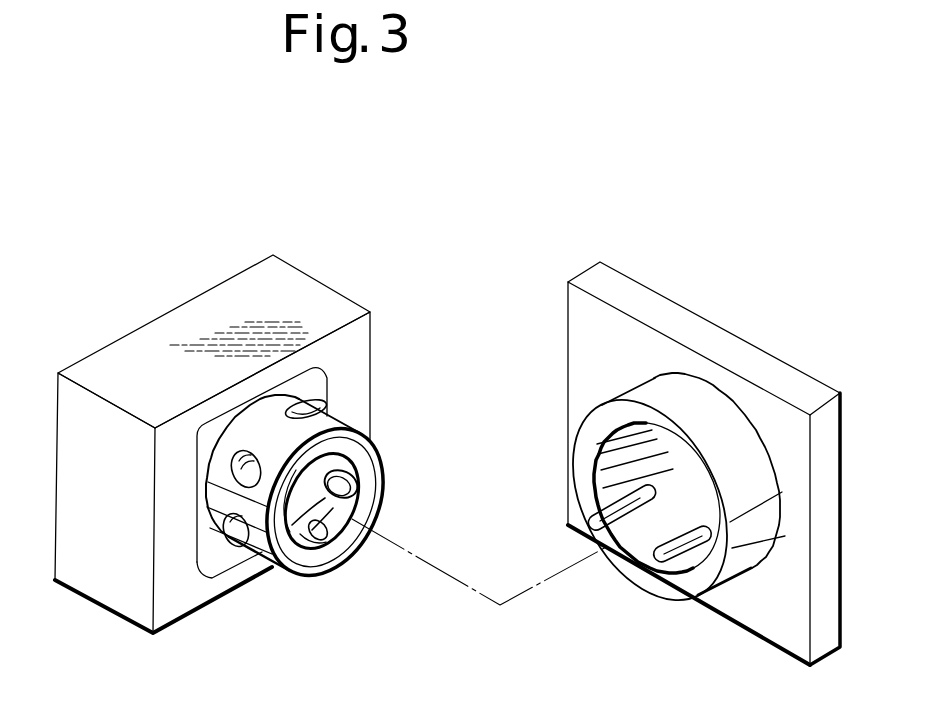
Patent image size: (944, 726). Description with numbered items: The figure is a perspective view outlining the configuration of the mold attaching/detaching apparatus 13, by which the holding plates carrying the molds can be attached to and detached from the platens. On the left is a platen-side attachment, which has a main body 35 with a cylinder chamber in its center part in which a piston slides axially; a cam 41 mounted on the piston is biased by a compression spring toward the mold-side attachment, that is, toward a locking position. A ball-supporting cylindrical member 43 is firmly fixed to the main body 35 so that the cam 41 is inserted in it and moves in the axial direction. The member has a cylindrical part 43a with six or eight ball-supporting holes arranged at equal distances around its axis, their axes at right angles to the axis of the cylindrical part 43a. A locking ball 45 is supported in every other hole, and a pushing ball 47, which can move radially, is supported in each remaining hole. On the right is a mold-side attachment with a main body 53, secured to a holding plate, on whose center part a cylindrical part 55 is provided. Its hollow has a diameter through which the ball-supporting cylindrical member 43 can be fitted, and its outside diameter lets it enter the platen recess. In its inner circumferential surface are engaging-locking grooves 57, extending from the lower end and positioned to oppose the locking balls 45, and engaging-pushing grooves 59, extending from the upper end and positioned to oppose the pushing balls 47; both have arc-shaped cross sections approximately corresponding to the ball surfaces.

The mold attaching/detaching apparatus 13 is at (517, 163).
The main body 35 is at (162, 335).
The cylindrical part 43a is at (214, 323).
The ball-supporting cylindrical member 43 is at (277, 575).
The pushing ball 47 is at (245, 470).
The locking ball 45 is at (345, 492).
The cam 41 is at (312, 525).
The main body 53 is at (745, 375).
The cylindrical part 55 is at (725, 438).
The engaging-locking groove 57 is at (603, 518).
The engaging-pushing groove 59 is at (679, 556).